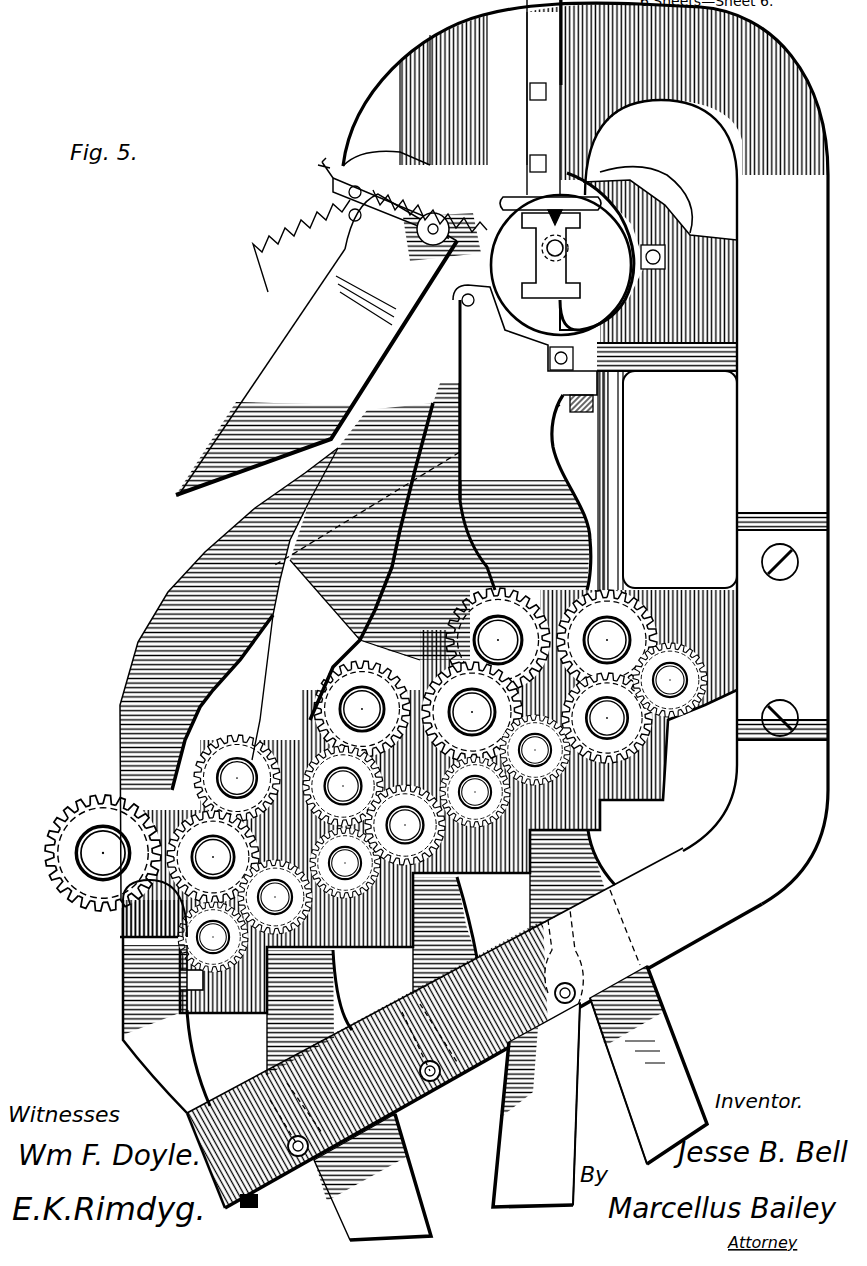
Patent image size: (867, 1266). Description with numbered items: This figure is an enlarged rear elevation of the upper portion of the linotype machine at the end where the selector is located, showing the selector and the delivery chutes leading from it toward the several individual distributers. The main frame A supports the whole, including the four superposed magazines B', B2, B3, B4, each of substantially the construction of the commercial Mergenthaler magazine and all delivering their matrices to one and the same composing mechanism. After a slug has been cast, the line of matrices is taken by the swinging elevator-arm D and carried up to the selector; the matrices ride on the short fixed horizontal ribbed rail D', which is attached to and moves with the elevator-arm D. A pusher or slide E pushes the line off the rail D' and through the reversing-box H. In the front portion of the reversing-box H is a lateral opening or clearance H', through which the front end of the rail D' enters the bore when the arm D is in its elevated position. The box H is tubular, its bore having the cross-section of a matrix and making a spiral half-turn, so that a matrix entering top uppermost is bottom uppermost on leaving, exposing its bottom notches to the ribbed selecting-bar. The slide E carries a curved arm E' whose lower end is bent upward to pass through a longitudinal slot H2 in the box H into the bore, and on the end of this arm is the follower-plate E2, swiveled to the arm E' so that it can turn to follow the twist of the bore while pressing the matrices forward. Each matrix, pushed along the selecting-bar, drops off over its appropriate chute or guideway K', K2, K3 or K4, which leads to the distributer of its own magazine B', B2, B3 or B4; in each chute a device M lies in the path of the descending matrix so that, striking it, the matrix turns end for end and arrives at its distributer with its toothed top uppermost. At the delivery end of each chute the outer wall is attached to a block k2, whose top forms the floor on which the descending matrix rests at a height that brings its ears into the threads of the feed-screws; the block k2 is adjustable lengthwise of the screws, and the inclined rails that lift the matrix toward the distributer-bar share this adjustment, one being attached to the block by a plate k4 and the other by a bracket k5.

The main frame A is at (585, 453).
The elevator-arm D is at (331, 327).
The ribbed rail D' is at (626, 237).
The slide E is at (570, 112).
The curved arm E' is at (660, 259).
The follower-plate E2 is at (572, 265).
The reversing-box H is at (561, 265).
The lateral opening or clearance H' is at (569, 255).
The longitudinal slot H2 is at (545, 322).
The turning device M is at (550, 358).
The chute or guideway K' is at (229, 674).
The chute or guideway K2 is at (396, 447).
The chute or guideway K3 is at (447, 408).
The chute or guideway K4 is at (525, 437).
The block k2 is at (140, 978).
The plate k4 is at (122, 944).
The bracket k5 is at (423, 958).
The magazine B' is at (474, 1030).
The magazine B2 is at (377, 1177).
The magazine B3 is at (540, 1100).
The magazine B4 is at (675, 1035).